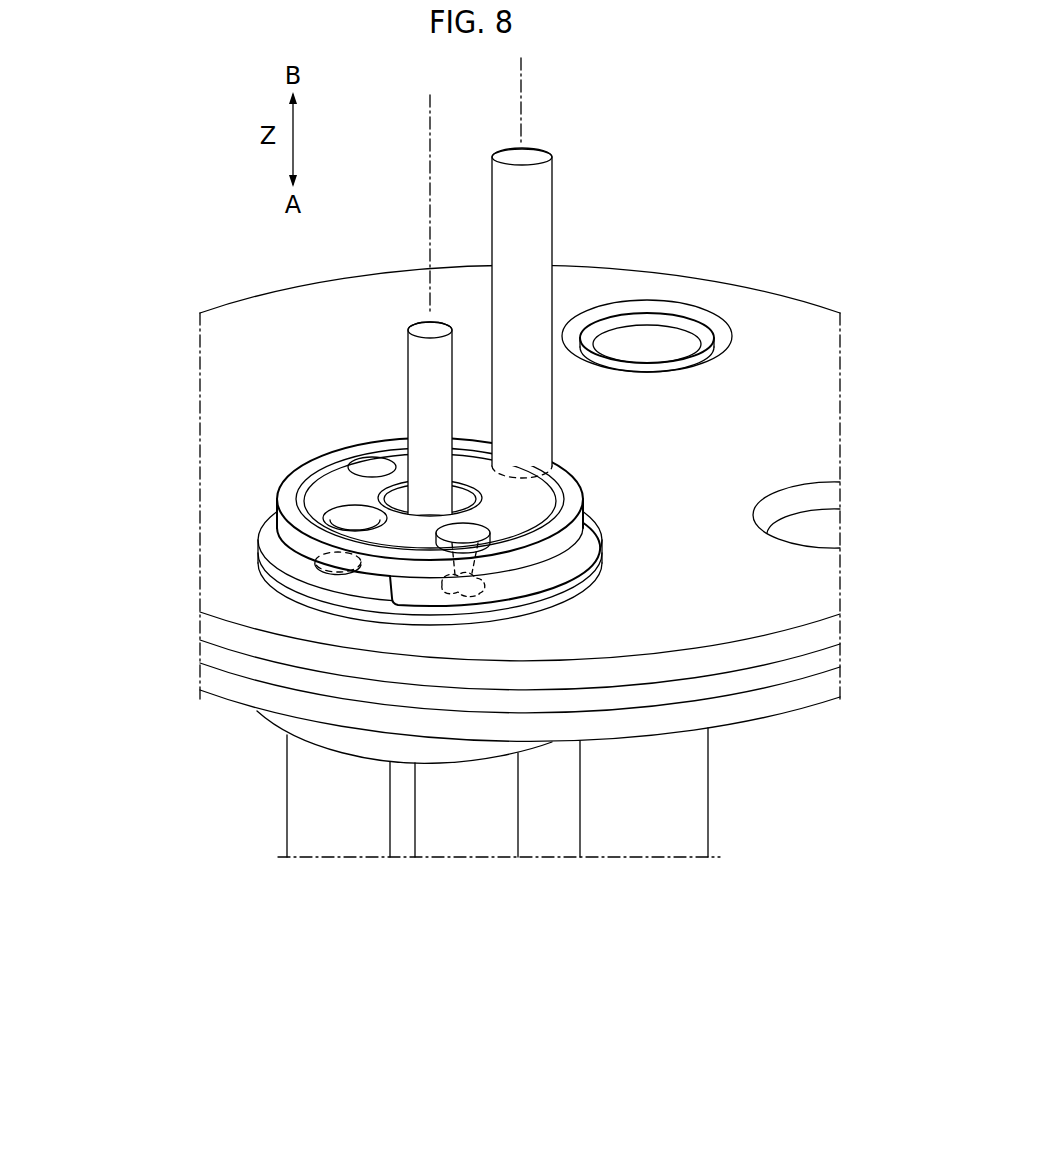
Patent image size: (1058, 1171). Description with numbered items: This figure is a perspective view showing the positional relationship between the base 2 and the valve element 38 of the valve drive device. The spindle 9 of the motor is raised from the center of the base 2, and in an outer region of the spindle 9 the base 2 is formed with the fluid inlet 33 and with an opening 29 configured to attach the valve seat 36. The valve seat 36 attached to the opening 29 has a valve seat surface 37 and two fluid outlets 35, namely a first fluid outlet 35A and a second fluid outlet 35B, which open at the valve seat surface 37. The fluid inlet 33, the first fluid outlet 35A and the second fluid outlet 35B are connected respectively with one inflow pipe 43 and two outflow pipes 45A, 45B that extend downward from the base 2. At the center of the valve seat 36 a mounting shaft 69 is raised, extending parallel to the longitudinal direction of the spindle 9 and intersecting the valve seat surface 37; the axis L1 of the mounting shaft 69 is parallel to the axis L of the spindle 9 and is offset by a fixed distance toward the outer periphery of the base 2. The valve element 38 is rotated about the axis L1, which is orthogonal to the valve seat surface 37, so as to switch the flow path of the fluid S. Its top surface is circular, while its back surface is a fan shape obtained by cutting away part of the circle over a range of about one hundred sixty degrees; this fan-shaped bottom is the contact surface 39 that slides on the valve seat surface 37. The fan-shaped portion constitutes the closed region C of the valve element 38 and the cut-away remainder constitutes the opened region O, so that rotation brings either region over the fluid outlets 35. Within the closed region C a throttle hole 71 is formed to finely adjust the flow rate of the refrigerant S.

The base 2 is at (770, 290).
The spindle 9 is at (553, 208).
The opening 29 is at (372, 616).
The fluid inlet 33 is at (667, 306).
The fluid outlet 35 is at (395, 667).
The first fluid outlet 35A is at (482, 596).
The second fluid outlet 35B is at (322, 568).
The valve seat 36 is at (272, 724).
The valve seat surface 37 is at (277, 543).
The valve element 38 is at (572, 468).
The contact surface 39 is at (550, 582).
The inflow pipe 43 is at (683, 822).
The outflow pipe 45A is at (490, 840).
The outflow pipe 45B is at (308, 840).
The mounting shaft 69 is at (407, 380).
The throttle hole 71 is at (467, 565).
The axis L is at (522, 85).
The axis L1 is at (430, 150).
The opened region O is at (290, 563).
The closed region C is at (443, 607).
The fluid S is at (338, 880).